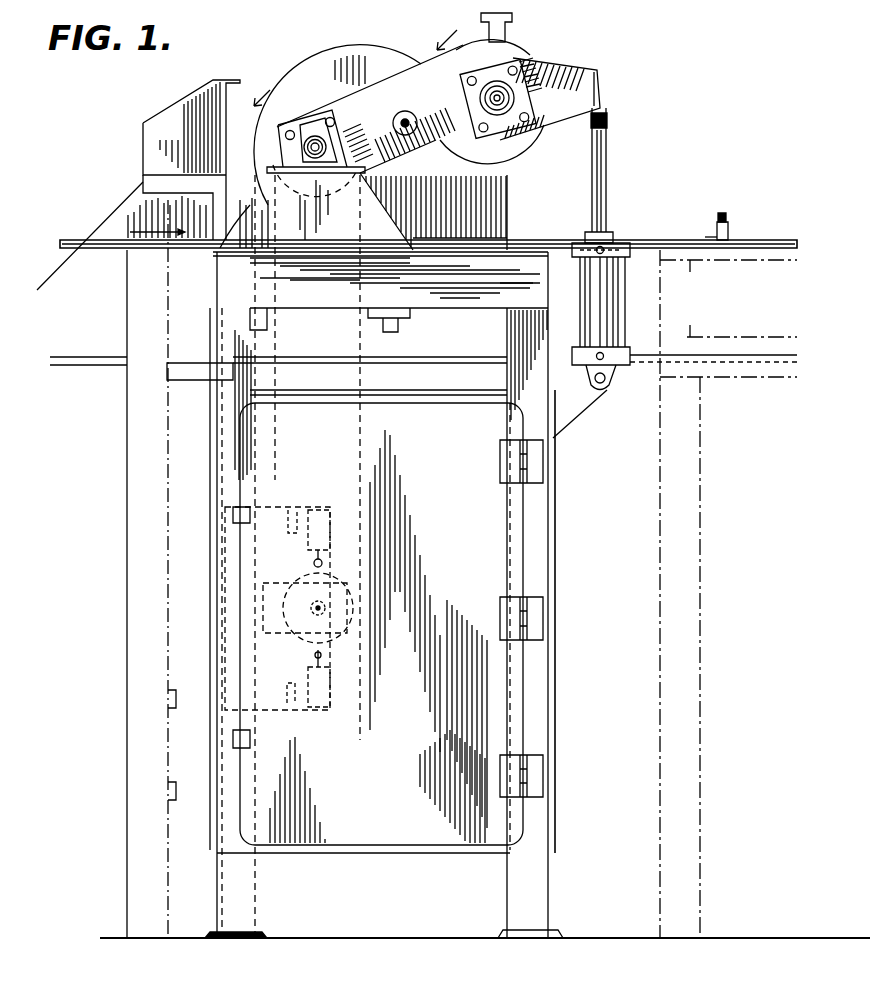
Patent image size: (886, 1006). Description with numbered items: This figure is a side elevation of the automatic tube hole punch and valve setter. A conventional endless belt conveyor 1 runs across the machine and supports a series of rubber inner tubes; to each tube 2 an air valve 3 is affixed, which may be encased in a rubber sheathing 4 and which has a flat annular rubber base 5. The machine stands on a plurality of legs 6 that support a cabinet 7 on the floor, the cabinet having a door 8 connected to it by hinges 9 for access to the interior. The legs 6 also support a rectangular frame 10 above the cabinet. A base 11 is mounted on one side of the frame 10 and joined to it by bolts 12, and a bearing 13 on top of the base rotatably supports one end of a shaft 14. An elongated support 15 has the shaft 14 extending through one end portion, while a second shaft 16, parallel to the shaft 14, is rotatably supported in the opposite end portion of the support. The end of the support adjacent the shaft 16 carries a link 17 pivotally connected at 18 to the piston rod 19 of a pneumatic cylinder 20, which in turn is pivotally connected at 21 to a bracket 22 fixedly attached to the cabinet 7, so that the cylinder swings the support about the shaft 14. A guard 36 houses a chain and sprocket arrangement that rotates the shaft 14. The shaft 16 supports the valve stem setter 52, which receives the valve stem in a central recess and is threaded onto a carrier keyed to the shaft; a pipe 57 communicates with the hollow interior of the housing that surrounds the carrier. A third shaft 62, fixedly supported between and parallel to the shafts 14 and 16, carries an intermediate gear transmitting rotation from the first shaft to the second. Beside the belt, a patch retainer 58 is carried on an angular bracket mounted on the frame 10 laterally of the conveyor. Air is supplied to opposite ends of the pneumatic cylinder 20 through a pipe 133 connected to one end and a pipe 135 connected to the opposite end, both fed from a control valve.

The endless belt conveyor 1 is at (757, 262).
The tube 2 is at (760, 240).
The air valve 3 is at (722, 214).
The rubber sheathing 4 is at (728, 230).
The flat annular rubber base 5 is at (713, 234).
The legs 6 is at (248, 904).
The cabinet 7 is at (538, 699).
The door 8 is at (473, 566).
The hinges 9 is at (540, 618).
The rectangular frame 10 is at (230, 287).
The base 11 is at (213, 252).
The bolts 12 is at (400, 330).
The bearing 13 is at (285, 122).
The shaft 14 is at (323, 113).
The elongated support 15 is at (372, 110).
The second shaft 16 is at (522, 66).
The link 17 is at (607, 112).
The pivot connection 18 is at (609, 129).
The piston rod 19 is at (607, 183).
The pneumatic cylinder 20 is at (620, 300).
The pivot connection 21 is at (610, 379).
The bracket 22 is at (580, 407).
The guard 36 is at (290, 49).
The valve stem setter 52 is at (514, 18).
The pipe 57 is at (145, 182).
The block 58 is at (150, 135).
The third shaft 62 is at (416, 130).
The pipe 133 is at (613, 238).
The pipe 135 is at (604, 353).